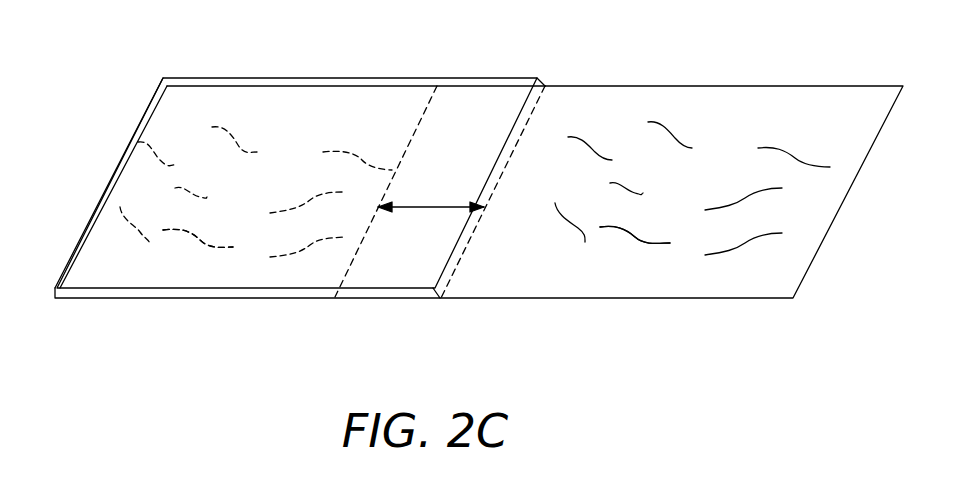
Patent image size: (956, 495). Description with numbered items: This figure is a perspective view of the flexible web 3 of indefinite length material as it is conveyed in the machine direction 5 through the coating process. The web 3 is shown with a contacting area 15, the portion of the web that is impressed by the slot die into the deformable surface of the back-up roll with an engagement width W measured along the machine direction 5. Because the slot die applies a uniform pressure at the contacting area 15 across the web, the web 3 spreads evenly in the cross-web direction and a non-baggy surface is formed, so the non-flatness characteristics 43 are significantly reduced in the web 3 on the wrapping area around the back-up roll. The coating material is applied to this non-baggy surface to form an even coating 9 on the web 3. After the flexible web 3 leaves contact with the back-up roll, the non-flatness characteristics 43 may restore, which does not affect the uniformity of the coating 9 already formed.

The flexible web 3 is at (775, 128).
The even coating 9 is at (334, 78).
The contacting area 15 is at (331, 313).
The non-flatness characteristics 43 is at (198, 238).
The machine direction 5 is at (93, 175).